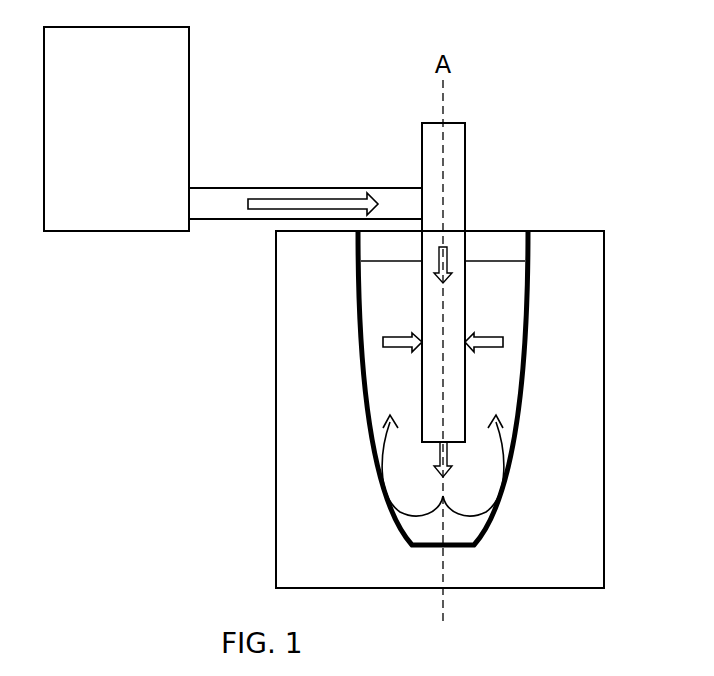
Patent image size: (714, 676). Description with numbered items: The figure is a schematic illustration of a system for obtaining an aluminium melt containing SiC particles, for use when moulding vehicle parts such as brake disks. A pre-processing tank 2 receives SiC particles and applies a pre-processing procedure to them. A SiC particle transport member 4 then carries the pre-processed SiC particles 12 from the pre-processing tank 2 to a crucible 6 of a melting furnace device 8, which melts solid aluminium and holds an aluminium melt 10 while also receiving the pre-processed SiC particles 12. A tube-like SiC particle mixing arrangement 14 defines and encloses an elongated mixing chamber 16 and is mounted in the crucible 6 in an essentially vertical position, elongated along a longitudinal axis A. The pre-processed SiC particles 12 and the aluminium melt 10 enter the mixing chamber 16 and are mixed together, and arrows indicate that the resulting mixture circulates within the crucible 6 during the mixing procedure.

The pre-processing tank 2 is at (116, 129).
The SiC particle transport member 4 is at (307, 187).
The crucible 6 is at (521, 367).
The melting furnace device 8 is at (276, 307).
The aluminium melt 10 is at (498, 292).
The pre-processed SiC particles 12 is at (283, 203).
The SiC particle mixing arrangement 14 is at (464, 203).
The mixing chamber 16 is at (442, 320).